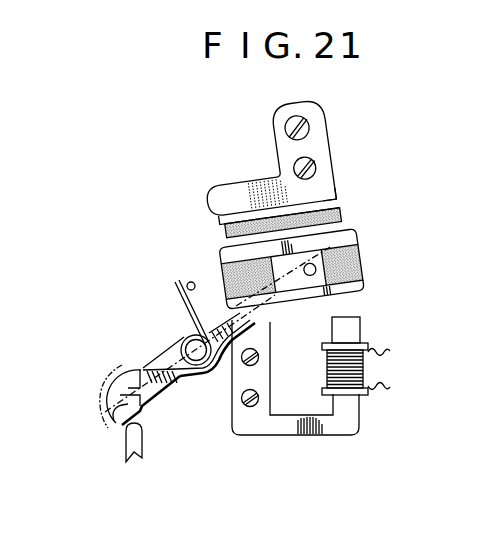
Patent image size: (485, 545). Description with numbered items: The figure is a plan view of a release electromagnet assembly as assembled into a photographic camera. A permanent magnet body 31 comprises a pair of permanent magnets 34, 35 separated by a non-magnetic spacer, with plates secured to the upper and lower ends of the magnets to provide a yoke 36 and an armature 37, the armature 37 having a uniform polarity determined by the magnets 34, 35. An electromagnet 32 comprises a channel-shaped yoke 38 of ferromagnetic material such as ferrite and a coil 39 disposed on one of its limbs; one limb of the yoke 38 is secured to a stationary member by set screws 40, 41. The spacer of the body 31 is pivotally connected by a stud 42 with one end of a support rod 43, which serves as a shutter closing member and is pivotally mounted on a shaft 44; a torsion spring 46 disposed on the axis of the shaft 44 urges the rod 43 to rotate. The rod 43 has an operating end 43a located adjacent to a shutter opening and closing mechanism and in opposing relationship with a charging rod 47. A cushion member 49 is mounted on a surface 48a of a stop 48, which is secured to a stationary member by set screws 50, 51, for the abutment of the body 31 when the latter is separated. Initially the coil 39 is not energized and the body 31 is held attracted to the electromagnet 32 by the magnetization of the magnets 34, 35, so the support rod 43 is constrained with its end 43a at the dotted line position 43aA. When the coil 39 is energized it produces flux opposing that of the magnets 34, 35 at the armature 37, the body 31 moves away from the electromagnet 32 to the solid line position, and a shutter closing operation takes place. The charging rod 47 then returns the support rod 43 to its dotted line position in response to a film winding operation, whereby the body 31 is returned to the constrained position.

The permanent magnet body 31 is at (301, 262).
The electromagnet 32 is at (317, 403).
The permanent magnet 34 is at (218, 280).
The permanent magnet 35 is at (350, 258).
The yoke 36 is at (222, 256).
The armature 37 is at (355, 284).
The channel-shaped yoke 38 is at (293, 437).
The coil 39 is at (363, 368).
The set screw 40 is at (260, 357).
The set screw 41 is at (260, 398).
The stud 42 is at (309, 263).
The support rod 43 is at (155, 377).
The operating end 43a is at (115, 424).
The dotted line position 43aA is at (140, 357).
The shaft 44 is at (190, 340).
The torsion spring 46 is at (179, 375).
The charging rod 47 is at (138, 445).
The stop 48 is at (243, 197).
The surface 48a is at (334, 196).
The cushion member 49 is at (332, 215).
The set screw 50 is at (311, 127).
The set screw 51 is at (318, 170).